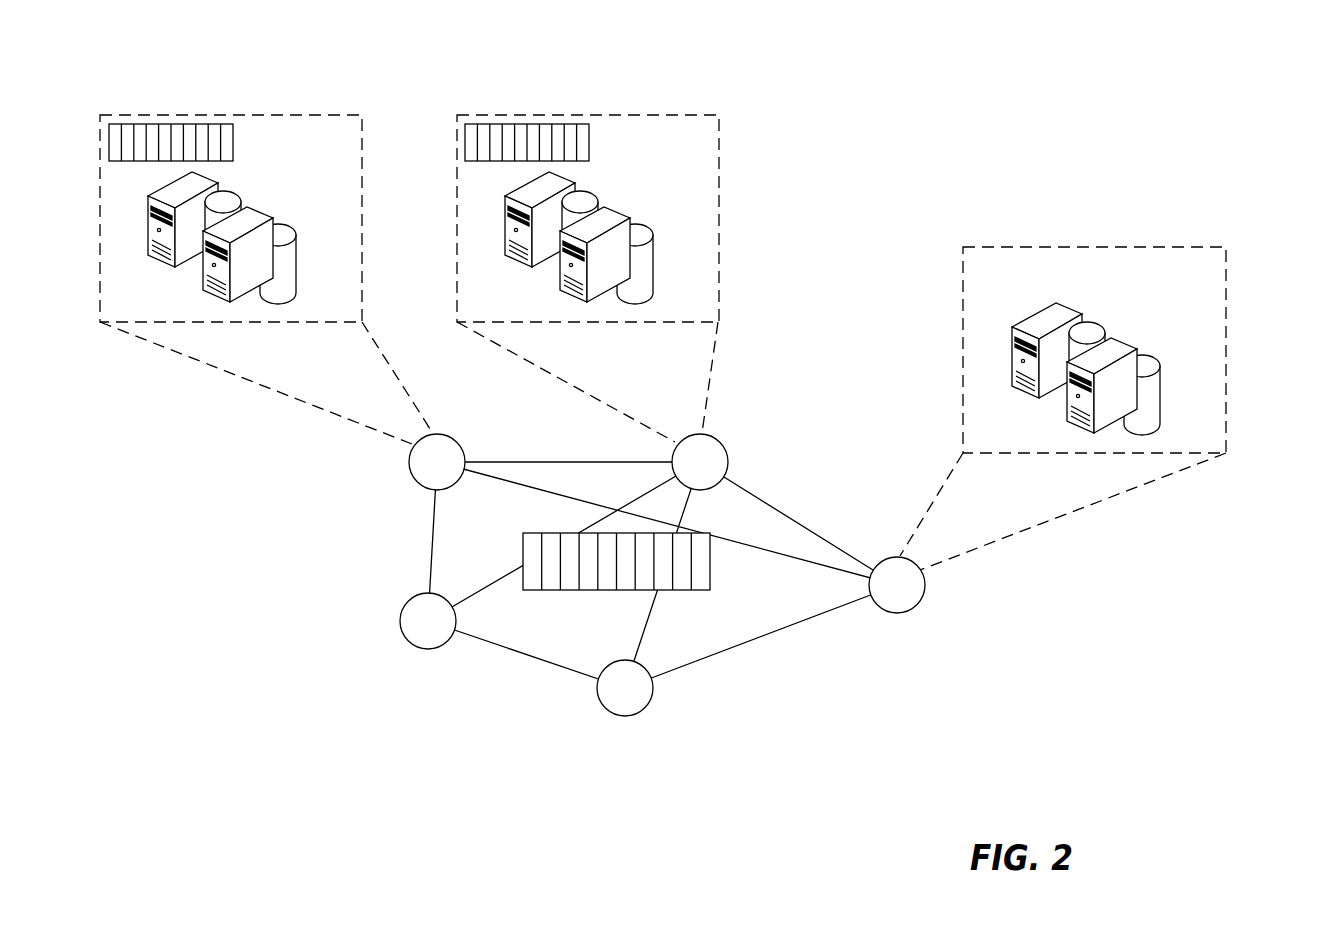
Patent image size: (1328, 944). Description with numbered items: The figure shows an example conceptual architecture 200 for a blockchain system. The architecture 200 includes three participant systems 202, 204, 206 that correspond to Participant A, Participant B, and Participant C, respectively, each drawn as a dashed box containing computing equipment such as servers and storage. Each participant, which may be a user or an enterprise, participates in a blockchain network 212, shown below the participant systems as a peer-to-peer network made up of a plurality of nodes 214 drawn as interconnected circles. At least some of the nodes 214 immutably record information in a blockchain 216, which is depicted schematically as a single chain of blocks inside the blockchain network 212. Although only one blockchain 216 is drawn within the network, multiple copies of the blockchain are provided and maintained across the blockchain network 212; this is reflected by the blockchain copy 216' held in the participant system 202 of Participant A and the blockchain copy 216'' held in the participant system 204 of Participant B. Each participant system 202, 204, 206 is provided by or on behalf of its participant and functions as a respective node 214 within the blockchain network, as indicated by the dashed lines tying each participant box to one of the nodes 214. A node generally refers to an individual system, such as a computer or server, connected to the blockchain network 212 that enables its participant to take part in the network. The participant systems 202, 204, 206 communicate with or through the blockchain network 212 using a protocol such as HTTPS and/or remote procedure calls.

The conceptual architecture 200 is at (1234, 82).
The participant system 202 is at (357, 117).
The participant system 204 is at (721, 131).
The participant system 206 is at (1227, 263).
The blockchain network 212 is at (327, 453).
The node 214 is at (458, 444).
The blockchain 216 is at (616, 591).
The blockchain copy 216' is at (221, 111).
The blockchain copy 216'' is at (581, 111).